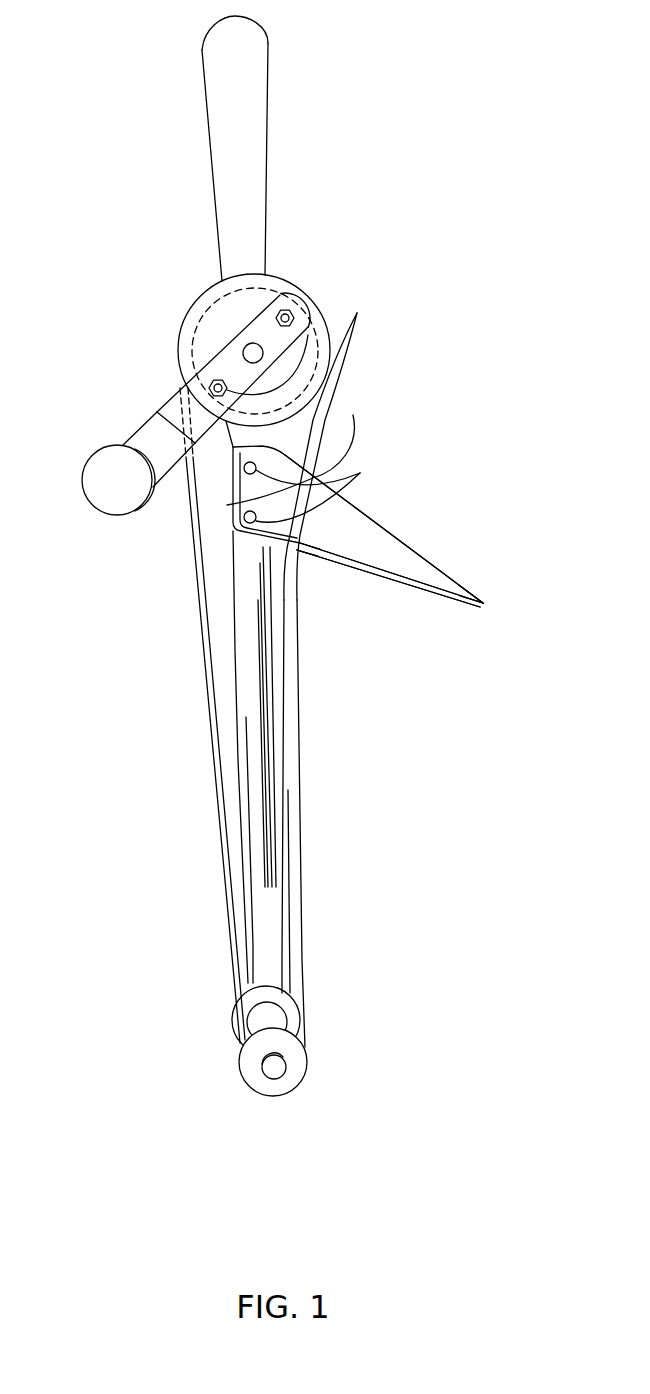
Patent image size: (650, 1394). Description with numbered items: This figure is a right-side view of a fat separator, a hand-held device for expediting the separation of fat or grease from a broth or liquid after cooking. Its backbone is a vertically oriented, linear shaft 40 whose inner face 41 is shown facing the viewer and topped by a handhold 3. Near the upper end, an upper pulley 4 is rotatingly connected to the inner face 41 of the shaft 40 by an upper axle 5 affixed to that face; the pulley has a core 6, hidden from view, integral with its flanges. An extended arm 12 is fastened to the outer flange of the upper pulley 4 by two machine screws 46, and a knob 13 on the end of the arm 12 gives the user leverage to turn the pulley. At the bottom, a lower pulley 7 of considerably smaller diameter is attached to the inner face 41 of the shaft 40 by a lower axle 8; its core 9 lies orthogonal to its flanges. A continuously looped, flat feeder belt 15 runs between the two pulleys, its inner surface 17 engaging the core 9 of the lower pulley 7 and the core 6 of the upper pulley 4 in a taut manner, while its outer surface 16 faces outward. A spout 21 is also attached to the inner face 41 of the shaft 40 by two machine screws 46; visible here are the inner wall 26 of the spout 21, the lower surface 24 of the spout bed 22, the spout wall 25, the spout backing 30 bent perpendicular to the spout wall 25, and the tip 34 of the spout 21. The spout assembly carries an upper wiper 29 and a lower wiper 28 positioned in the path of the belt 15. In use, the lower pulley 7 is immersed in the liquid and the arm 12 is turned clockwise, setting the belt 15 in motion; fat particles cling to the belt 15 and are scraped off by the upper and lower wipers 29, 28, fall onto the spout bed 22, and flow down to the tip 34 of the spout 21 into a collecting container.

The handhold 3 is at (268, 128).
The upper pulley 4 is at (210, 342).
The upper axle 5 is at (245, 345).
The core 6 is at (218, 300).
The lower pulley 7 is at (297, 1060).
The lower axle 8 is at (278, 1072).
The core 9 is at (273, 1018).
The arm 12 is at (148, 418).
The knob 13 is at (83, 478).
The feeder belt 15 is at (233, 717).
The outer surface 16 is at (207, 700).
The inner surface 17 is at (208, 645).
The spout 21 is at (398, 529).
The spout bed 22 is at (390, 573).
The lower surface 24 is at (390, 594).
The spout wall 25 is at (417, 548).
The inner wall 26 is at (365, 533).
The lower wiper 28 is at (303, 549).
The upper wiper 29 is at (295, 448).
The spout backing 30 is at (230, 506).
The tip 34 is at (485, 604).
The shaft 40 is at (194, 765).
The inner face 41 is at (248, 772).
The machine screws 46 is at (322, 444).